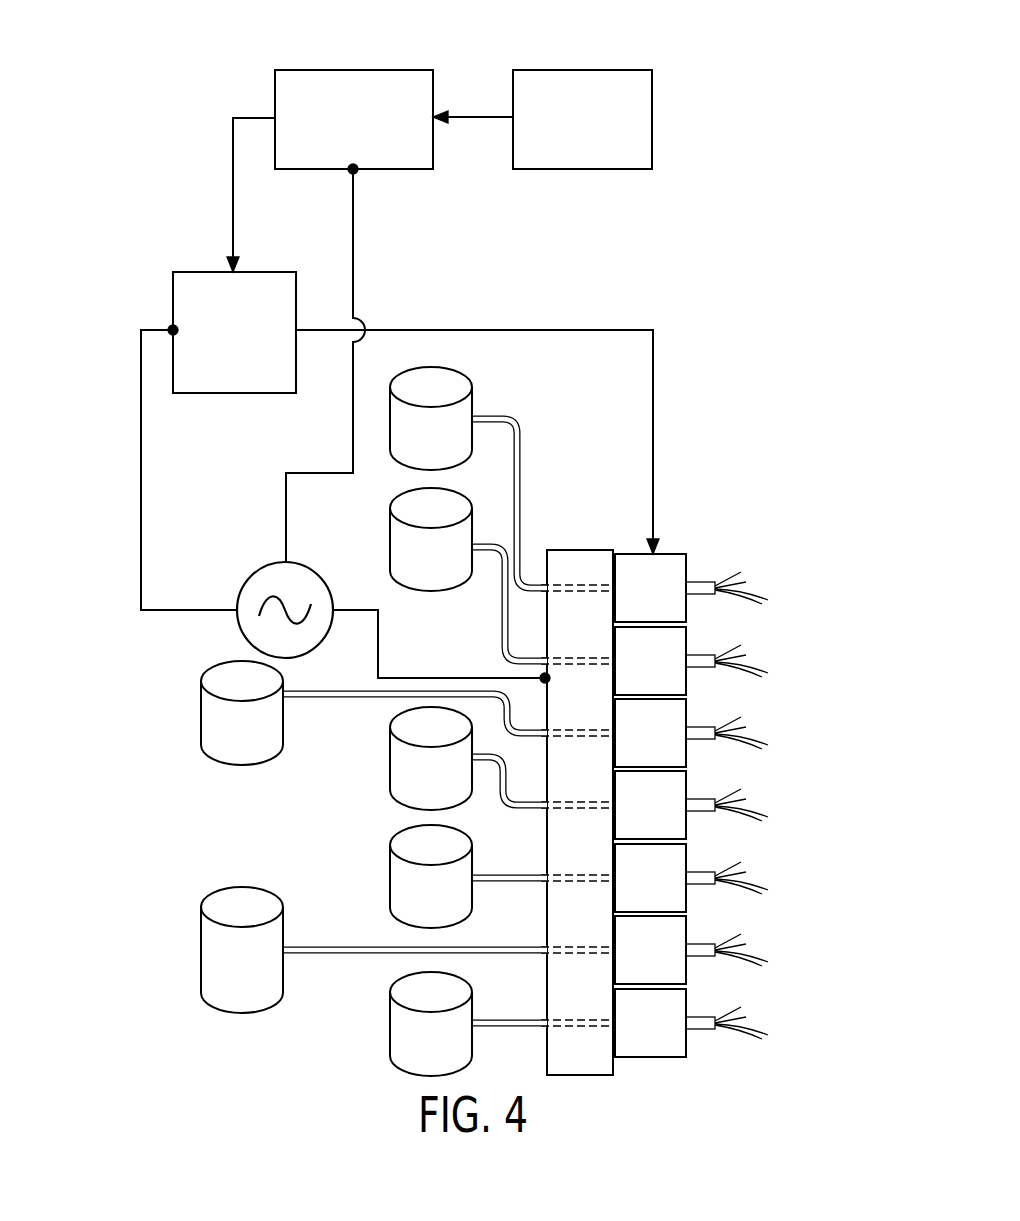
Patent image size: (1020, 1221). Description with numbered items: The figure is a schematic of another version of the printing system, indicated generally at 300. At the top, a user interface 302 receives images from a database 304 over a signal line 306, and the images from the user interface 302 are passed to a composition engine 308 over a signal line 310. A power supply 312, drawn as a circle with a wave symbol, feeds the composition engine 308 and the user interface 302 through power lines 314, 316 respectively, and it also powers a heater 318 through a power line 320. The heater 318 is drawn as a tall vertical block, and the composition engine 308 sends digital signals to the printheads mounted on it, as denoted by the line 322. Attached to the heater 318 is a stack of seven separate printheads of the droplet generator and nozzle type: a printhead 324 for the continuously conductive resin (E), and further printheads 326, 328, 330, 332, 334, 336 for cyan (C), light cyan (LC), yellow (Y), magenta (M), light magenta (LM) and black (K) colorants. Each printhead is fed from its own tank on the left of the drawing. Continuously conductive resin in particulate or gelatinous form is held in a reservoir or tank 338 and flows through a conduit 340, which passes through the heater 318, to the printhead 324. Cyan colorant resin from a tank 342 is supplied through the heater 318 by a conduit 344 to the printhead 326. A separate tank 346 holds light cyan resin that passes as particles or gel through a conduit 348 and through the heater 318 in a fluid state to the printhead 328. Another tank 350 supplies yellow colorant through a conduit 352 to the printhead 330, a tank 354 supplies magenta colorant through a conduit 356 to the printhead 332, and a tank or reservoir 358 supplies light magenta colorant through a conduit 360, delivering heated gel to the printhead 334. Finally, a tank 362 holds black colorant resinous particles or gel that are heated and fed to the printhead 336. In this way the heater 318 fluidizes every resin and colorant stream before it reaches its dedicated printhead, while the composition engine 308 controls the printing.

The system 300 is at (800, 84).
The user interface 302 is at (354, 70).
The database 304 is at (581, 70).
The signal line 306 is at (474, 116).
The composition engine 308 is at (266, 272).
The signal line 310 is at (232, 232).
The power supply 312 is at (256, 572).
The power line 314 is at (140, 464).
The power line 316 is at (354, 226).
The heater 318 is at (576, 550).
The power line 320 is at (380, 641).
The line 322 is at (541, 330).
The printhead 324 is at (688, 562).
The printhead 326 is at (688, 635).
The printhead 328 is at (688, 707).
The printhead 330 is at (688, 779).
The printhead 332 is at (688, 852).
The printhead 334 is at (688, 924).
The printhead 336 is at (688, 997).
The reservoir or tank 338 is at (473, 401).
The conduit 340 is at (522, 470).
The tank 342 is at (390, 540).
The conduit 344 is at (487, 544).
The tank 346 is at (200, 714).
The conduit 348 is at (323, 700).
The tank 350 is at (390, 771).
The conduit 352 is at (508, 801).
The tank 354 is at (390, 881).
The conduit 356 is at (516, 885).
The tank or reservoir 358 is at (200, 953).
The conduit 360 is at (312, 947).
The tank 362 is at (390, 1026).